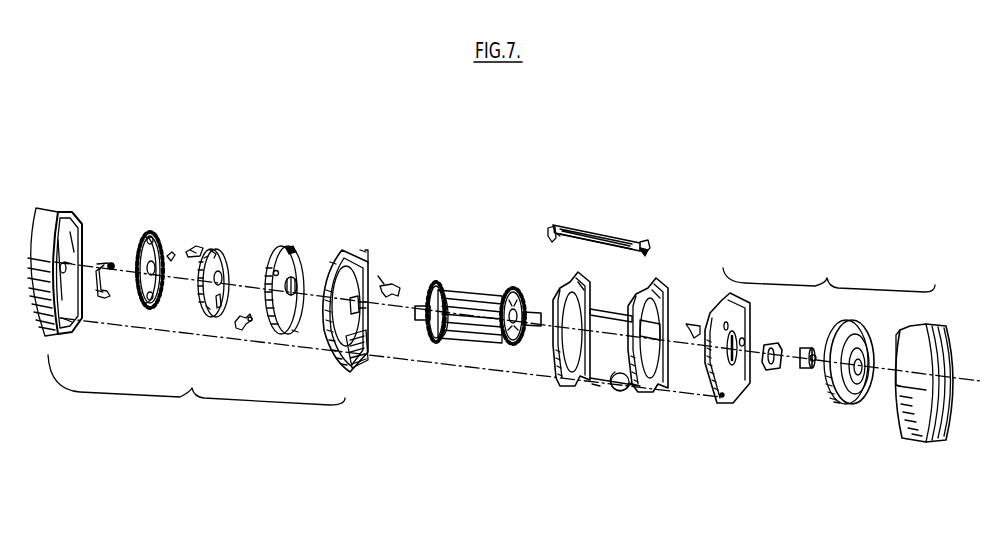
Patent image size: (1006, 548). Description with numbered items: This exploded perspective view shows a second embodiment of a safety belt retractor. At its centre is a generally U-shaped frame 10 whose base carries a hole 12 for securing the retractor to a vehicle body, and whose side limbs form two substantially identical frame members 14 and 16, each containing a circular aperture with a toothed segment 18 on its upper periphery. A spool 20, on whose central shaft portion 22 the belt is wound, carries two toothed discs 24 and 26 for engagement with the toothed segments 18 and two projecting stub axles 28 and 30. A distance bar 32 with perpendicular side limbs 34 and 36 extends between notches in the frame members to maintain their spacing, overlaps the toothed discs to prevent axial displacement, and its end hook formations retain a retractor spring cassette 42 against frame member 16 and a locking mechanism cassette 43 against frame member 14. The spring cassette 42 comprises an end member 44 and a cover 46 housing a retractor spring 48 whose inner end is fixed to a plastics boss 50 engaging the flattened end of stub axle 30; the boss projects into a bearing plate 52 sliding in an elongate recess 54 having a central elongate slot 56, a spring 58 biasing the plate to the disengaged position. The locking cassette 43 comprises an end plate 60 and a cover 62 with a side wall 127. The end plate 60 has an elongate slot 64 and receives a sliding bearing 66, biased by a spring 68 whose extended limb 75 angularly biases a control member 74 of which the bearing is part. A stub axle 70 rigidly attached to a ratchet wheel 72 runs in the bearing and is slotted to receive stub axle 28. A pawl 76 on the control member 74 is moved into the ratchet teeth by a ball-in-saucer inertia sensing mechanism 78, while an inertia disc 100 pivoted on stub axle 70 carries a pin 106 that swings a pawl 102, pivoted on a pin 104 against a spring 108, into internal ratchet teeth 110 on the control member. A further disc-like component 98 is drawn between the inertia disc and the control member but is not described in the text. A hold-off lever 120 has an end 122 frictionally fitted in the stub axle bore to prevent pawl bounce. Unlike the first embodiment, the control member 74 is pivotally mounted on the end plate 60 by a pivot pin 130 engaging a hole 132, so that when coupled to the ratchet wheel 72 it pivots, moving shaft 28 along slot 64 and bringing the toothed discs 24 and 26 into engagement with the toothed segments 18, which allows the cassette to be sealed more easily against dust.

The frame 10 is at (604, 310).
The hole 12 is at (613, 386).
The frame member 14 is at (562, 290).
The frame member 16 is at (650, 292).
The toothed segment 18 is at (580, 282).
The spool 20 is at (470, 276).
The central shaft portion 22 is at (464, 322).
The toothed disc 24 is at (426, 286).
The toothed disc 26 is at (512, 290).
The stub axle 28 is at (420, 322).
The stub axle 30 is at (528, 328).
The distance bar 32 is at (592, 222).
The side limb 34 is at (548, 238).
The side limb 36 is at (650, 250).
The retractor spring cassette 42 is at (827, 246).
The locking mechanism cassette 43 is at (190, 416).
The end member 44 is at (737, 396).
The cover 46 is at (946, 432).
The retractor spring 48 is at (836, 392).
The plastics boss 50 is at (807, 370).
The bearing plate 52 is at (772, 370).
The elongate recess 54 is at (732, 332).
The elongate slot 56 is at (744, 344).
The spring 58 is at (692, 324).
The end plate 60 is at (340, 254).
The cover 62 is at (58, 212).
The elongate slot 64 is at (360, 310).
The sliding bearing 66 is at (296, 282).
The spring 68 is at (394, 282).
The stub axle 70 is at (155, 294).
The ratchet wheel 72 is at (140, 258).
The control member 74 is at (293, 332).
The extended limb 75 is at (376, 278).
The pawl 76 is at (242, 330).
The inertia sensing mechanism 78 is at (346, 352).
The disc 98 is at (276, 326).
The inertia disc 100 is at (207, 302).
The pawl 102 is at (198, 248).
The pin 104 is at (152, 236).
The pin 106 is at (213, 252).
The spring 108 is at (171, 252).
The internal ratchet teeth 110 is at (291, 248).
The hold-off lever 120 is at (99, 294).
The lever end 122 is at (107, 262).
The side wall 127 is at (72, 238).
The pivot pin 130 is at (331, 262).
The hole 132 is at (273, 270).